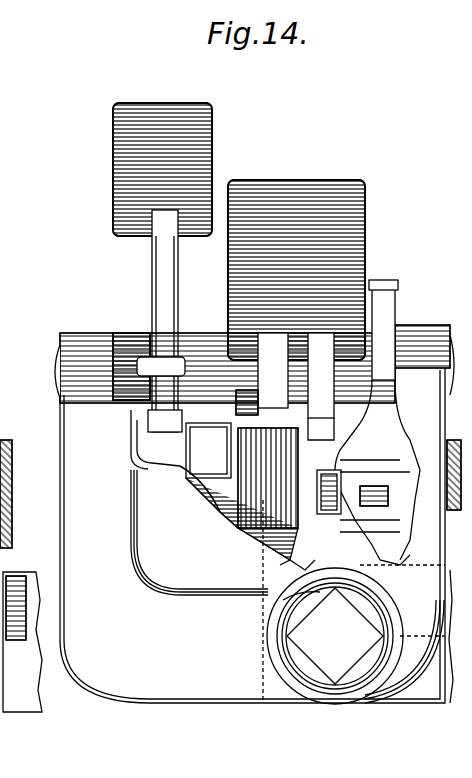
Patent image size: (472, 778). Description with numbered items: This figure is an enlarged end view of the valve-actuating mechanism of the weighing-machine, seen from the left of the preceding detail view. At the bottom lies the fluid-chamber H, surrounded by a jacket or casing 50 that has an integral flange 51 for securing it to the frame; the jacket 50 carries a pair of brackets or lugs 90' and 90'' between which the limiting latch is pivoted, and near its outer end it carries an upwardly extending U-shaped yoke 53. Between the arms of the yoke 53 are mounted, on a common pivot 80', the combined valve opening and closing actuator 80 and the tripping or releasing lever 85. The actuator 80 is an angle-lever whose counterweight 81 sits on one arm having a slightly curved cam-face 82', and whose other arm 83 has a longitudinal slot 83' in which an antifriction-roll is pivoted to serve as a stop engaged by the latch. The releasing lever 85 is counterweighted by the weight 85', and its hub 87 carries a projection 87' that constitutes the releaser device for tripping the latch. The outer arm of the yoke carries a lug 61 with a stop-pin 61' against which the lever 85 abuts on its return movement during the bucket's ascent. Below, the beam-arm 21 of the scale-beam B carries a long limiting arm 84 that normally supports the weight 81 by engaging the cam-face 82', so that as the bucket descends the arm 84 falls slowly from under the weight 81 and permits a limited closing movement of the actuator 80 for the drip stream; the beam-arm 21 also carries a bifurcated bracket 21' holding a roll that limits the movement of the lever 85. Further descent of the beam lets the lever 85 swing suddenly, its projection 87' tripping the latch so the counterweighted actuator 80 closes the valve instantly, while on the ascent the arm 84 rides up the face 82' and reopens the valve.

The weight 85' is at (182, 169).
The tripping or releasing lever 85 is at (152, 321).
The counterweight 81 is at (357, 232).
The valve opening and closing actuator 80 is at (257, 364).
The common pivot 80' is at (41, 371).
The projection or lug 61 is at (117, 366).
The stop-pin 61' is at (139, 353).
The hub 87 is at (172, 343).
The projection 87' is at (209, 443).
The stop or limiting arm 84 is at (269, 365).
The working face or cam-face 82' is at (312, 386).
The arm 83 is at (376, 420).
The longitudinal slot 83' is at (377, 482).
The beam-arm 21 is at (242, 494).
The bifurcated bracket 21' is at (139, 439).
The scale-beam B is at (228, 513).
The U-shaped yoke 53 is at (133, 540).
The jacket or casing 50 is at (268, 615).
The flange 51 is at (418, 630).
The bracket or lug 90' is at (207, 517).
The bracket or lug 90'' is at (293, 570).
The fluid-chamber H is at (283, 598).